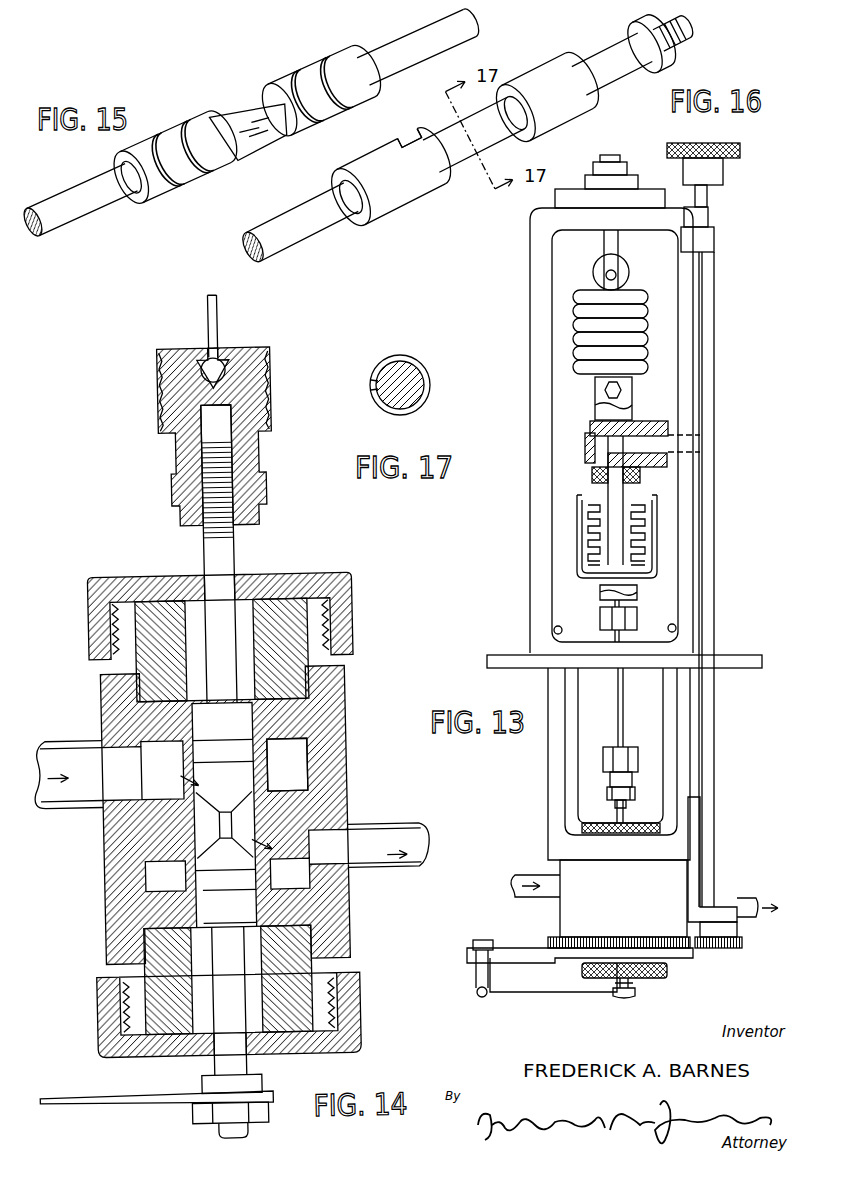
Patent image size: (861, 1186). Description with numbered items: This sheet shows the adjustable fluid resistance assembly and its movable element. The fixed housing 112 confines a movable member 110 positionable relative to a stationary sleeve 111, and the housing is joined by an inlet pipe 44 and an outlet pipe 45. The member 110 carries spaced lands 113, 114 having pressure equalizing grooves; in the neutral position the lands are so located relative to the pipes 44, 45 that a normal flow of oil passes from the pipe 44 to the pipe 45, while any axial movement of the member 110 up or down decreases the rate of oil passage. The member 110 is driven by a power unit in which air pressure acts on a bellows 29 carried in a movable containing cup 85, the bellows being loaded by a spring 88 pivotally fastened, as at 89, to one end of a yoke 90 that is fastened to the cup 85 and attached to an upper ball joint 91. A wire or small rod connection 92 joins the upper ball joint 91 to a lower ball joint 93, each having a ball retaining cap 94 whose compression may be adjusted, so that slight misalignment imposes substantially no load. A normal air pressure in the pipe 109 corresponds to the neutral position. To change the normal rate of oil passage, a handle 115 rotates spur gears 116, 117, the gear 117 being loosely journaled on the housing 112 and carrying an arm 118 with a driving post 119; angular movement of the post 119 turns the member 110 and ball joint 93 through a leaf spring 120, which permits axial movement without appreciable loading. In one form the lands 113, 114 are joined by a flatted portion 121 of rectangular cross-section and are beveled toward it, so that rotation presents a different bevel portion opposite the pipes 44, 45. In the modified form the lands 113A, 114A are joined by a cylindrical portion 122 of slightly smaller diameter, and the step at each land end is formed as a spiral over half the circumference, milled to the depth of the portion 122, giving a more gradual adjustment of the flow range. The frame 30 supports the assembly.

In FIG. 13, the bellows 29 is at (585, 560).
In FIG. 13, the frame 30 is at (750, 525).
In FIG. 14, the inlet pipe 44 is at (82, 815).
In FIG. 13, the inlet pipe 44 is at (530, 877).
In FIG. 14, the outlet pipe 45 is at (400, 827).
In FIG. 13, the outlet pipe 45 is at (740, 900).
In FIG. 13, the movable containing cup 85 is at (648, 578).
In FIG. 13, the spring 88 is at (634, 294).
In FIG. 13, the pivotal fastening 89 is at (633, 396).
In FIG. 13, the yoke 90 is at (597, 406).
In FIG. 13, the upper ball joint 91 is at (605, 620).
In FIG. 14, the rod connection 92 is at (216, 310).
In FIG. 13, the rod connection 92 is at (623, 722).
In FIG. 14, the lower ball joint 93 is at (172, 463).
In FIG. 13, the lower ball joint 93 is at (606, 754).
In FIG. 14, the ball retaining cap 94 is at (211, 356).
In FIG. 13, the pipe 109 is at (688, 441).
In FIG. 15, the movable member 110 is at (82, 23).
In FIG. 14, the movable member 110 is at (240, 555).
In FIG. 13, the movable member 110 is at (624, 813).
In FIG. 14, the stationary sleeve 111 is at (270, 764).
In FIG. 14, the fixed housing 112 is at (347, 780).
In FIG. 13, the fixed housing 112 is at (560, 914).
In FIG. 15, the land 113 is at (167, 140).
In FIG. 16, the land 113A is at (441, 186).
In FIG. 15, the land 114 is at (314, 74).
In FIG. 16, the land 114A is at (588, 74).
In FIG. 17, the land 114A is at (432, 392).
In FIG. 13, the handle 115 is at (742, 160).
In FIG. 13, the spur gear 116 is at (722, 948).
In FIG. 13, the spur gear 117 is at (614, 937).
In FIG. 13, the arm 118 is at (505, 960).
In FIG. 13, the driving post 119 is at (470, 978).
In FIG. 14, the leaf spring 120 is at (98, 1100).
In FIG. 13, the leaf spring 120 is at (540, 992).
In FIG. 15, the flatted portion 121 is at (246, 109).
In FIG. 16, the cylindrical portion 122 is at (407, 125).
In FIG. 17, the cylindrical portion 122 is at (392, 357).